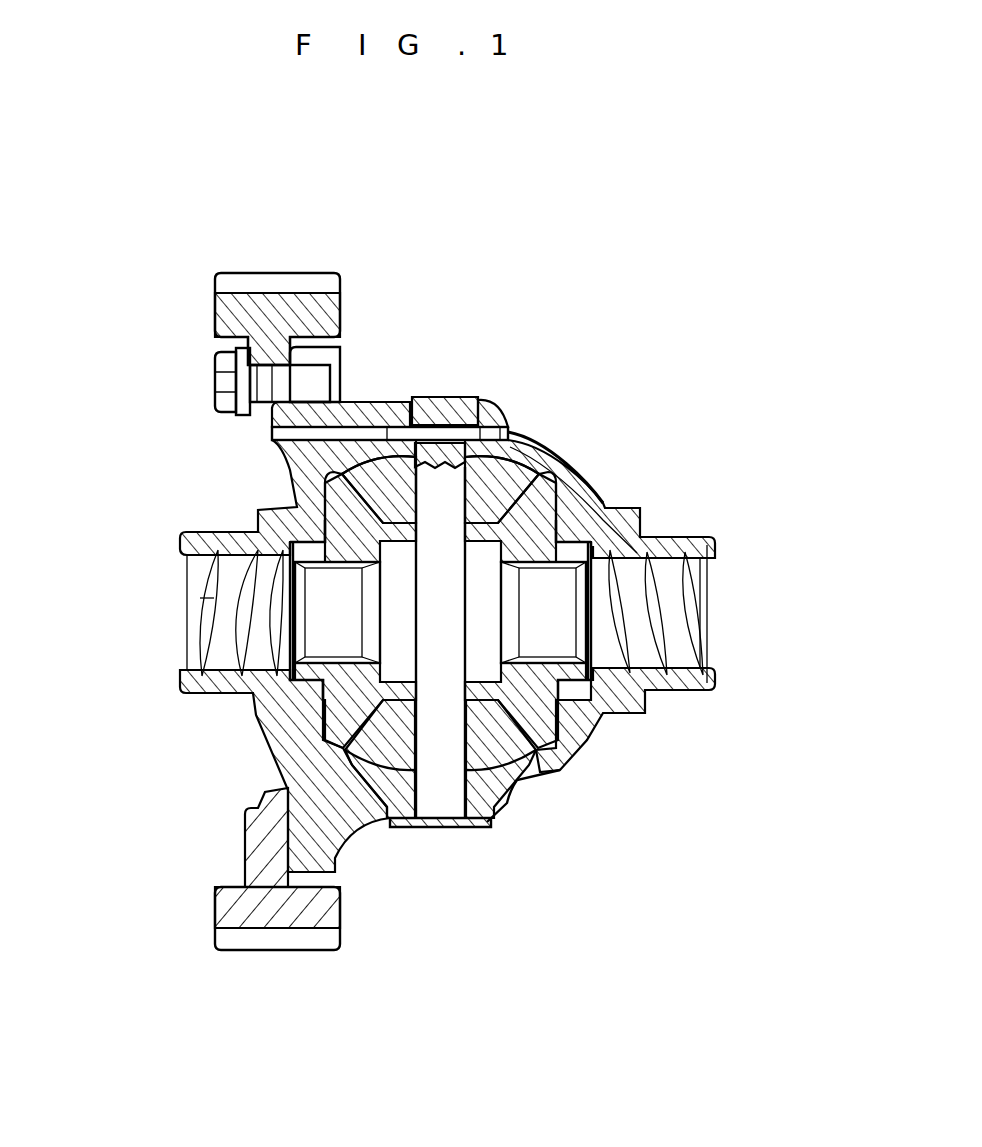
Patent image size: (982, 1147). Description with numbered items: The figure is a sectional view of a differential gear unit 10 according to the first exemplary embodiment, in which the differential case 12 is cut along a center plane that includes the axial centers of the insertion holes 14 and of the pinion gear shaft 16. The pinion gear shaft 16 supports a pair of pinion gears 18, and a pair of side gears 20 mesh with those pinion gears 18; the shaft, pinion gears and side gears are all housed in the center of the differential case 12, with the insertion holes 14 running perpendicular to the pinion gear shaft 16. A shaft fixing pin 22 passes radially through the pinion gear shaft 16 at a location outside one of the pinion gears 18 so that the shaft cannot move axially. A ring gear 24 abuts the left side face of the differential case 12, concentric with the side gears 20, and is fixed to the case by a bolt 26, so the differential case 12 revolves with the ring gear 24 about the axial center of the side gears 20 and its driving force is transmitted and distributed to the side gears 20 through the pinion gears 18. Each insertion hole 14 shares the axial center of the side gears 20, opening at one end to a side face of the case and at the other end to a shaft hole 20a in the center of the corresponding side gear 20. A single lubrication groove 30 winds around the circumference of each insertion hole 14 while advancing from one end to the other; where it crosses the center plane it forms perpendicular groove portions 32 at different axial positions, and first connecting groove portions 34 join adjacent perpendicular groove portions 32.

The differential gear unit 10 is at (587, 282).
The differential case 12 is at (447, 580).
The insertion hole 14 is at (437, 620).
The pinion gear shaft 16 is at (440, 797).
The pinion gear 18 is at (495, 470).
The side gear 20 is at (431, 659).
The shaft hole 20a is at (345, 697).
The shaft fixing pin 22 is at (398, 432).
The ring gear 24 is at (310, 300).
The bolt 26 is at (228, 380).
The lubrication groove 30 is at (235, 608).
The perpendicular groove portion 32 is at (216, 566).
The first connecting groove portion 34 is at (132, 600).